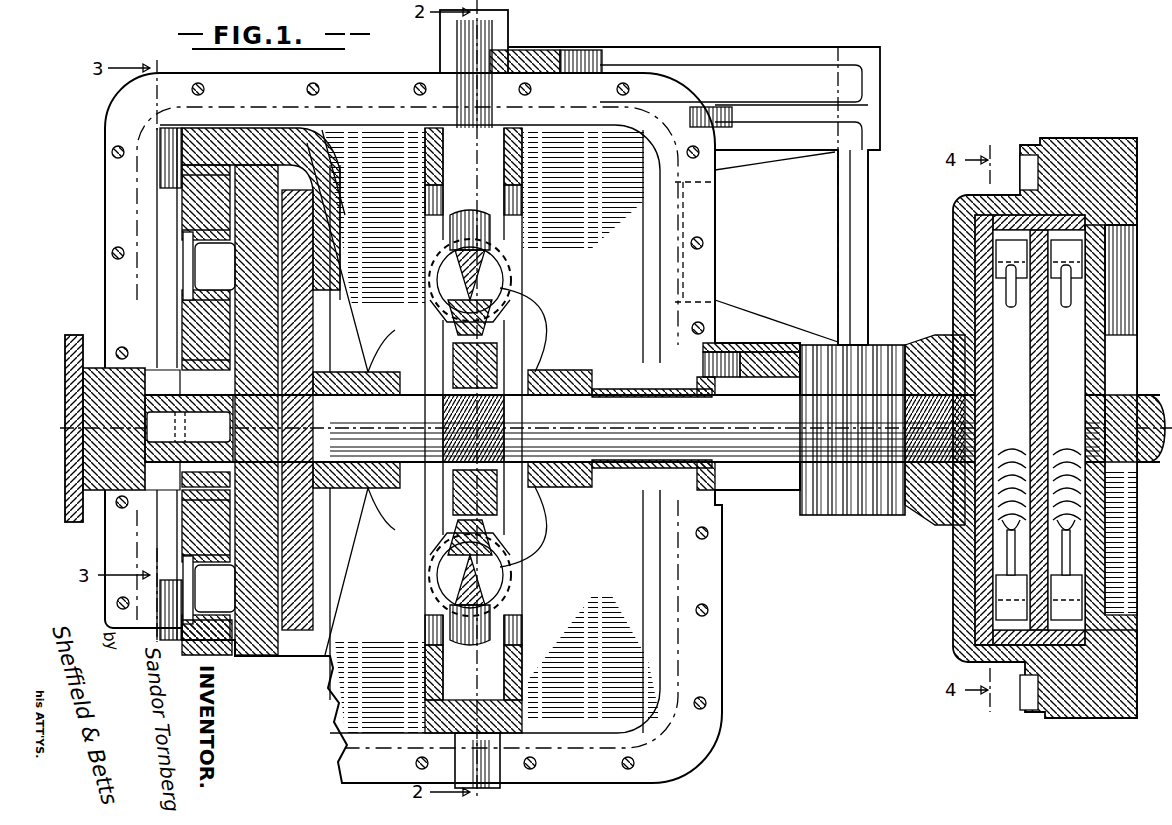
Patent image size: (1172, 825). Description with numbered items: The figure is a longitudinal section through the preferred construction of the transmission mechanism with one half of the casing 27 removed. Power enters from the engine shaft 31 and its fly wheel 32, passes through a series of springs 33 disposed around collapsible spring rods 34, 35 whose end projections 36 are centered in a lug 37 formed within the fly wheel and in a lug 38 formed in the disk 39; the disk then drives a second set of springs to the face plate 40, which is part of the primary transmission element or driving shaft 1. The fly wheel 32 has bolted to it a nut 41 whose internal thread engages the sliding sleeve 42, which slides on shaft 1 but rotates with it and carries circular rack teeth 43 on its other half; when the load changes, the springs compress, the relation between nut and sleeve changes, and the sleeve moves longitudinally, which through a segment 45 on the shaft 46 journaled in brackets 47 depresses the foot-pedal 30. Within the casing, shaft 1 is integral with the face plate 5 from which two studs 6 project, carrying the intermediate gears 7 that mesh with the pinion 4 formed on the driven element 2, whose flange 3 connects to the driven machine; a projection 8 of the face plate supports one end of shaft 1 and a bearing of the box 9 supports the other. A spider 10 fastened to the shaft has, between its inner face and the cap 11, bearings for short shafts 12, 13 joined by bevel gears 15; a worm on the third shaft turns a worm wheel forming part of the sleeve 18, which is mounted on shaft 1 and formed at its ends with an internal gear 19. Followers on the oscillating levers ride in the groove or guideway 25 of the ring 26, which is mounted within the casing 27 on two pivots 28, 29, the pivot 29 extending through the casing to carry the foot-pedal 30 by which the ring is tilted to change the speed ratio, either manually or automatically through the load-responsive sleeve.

The primary transmission element 1 is at (652, 428).
The driven element 2 is at (110, 428).
The flange 3 is at (76, 338).
The pinion 4 is at (175, 372).
The face plate 5 is at (262, 352).
The studs 6 is at (209, 428).
The intermediate gears 7 is at (205, 322).
The projection 8 is at (188, 427).
The box 9 is at (708, 474).
The spider 10 is at (540, 345).
The cap 11 is at (462, 278).
The short shaft 12 is at (505, 550).
The short shaft 13 is at (492, 312).
The bevel gears 15 is at (440, 262).
The sleeve 18 is at (362, 370).
The internal gear 19 is at (208, 135).
The groove or guideway 25 is at (503, 185).
The ring 26 is at (522, 160).
The casing 27 is at (588, 92).
The pivot 28 is at (492, 760).
The pivot 29 is at (540, 62).
The foot-pedal 30 is at (508, 25).
The engine shaft 31 is at (1118, 468).
The fly wheel 32 is at (1082, 142).
The springs 33 is at (1110, 422).
The spring rod 34 is at (1082, 512).
The spring rod 35 is at (1007, 538).
The projections 36 is at (960, 628).
The lug 37 is at (1065, 392).
The lug 38 is at (998, 596).
The disk 39 is at (1040, 328).
The face plate 40 is at (953, 262).
The nut 41 is at (915, 515).
The sliding sleeve 42 is at (928, 345).
The circular rack teeth 43 is at (848, 500).
The segment 45 is at (690, 62).
The shaft 46 is at (840, 212).
The brackets 47 is at (735, 110).